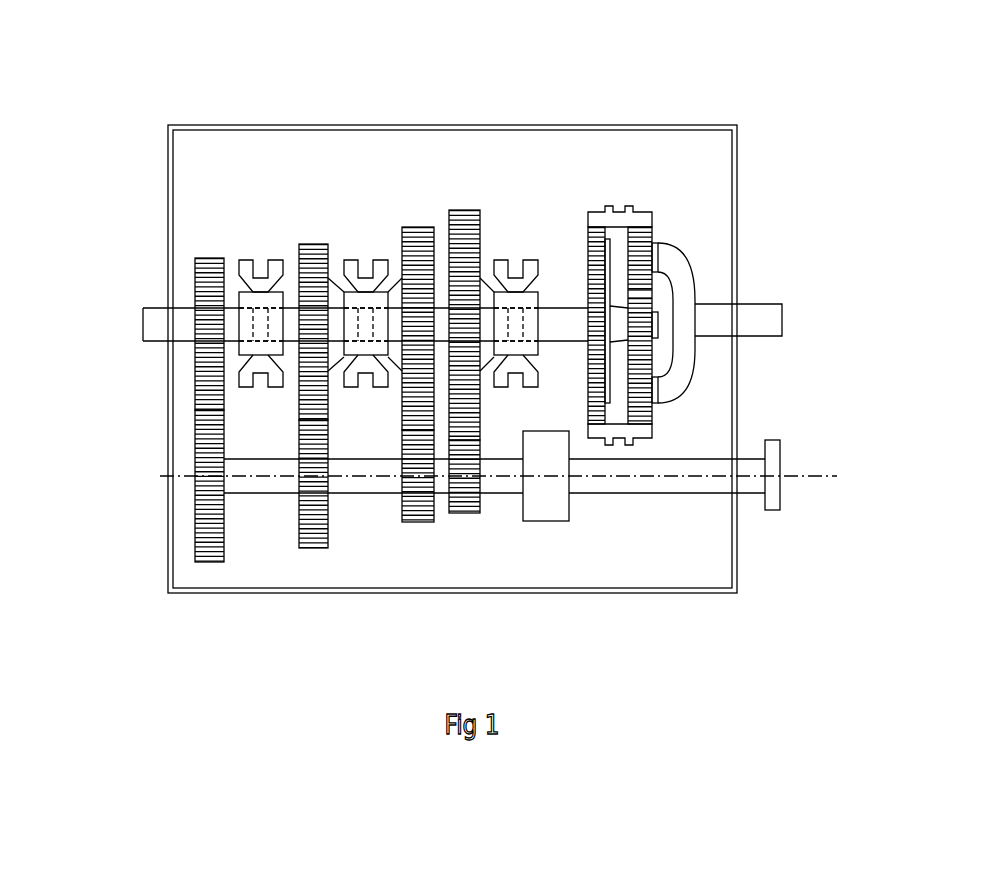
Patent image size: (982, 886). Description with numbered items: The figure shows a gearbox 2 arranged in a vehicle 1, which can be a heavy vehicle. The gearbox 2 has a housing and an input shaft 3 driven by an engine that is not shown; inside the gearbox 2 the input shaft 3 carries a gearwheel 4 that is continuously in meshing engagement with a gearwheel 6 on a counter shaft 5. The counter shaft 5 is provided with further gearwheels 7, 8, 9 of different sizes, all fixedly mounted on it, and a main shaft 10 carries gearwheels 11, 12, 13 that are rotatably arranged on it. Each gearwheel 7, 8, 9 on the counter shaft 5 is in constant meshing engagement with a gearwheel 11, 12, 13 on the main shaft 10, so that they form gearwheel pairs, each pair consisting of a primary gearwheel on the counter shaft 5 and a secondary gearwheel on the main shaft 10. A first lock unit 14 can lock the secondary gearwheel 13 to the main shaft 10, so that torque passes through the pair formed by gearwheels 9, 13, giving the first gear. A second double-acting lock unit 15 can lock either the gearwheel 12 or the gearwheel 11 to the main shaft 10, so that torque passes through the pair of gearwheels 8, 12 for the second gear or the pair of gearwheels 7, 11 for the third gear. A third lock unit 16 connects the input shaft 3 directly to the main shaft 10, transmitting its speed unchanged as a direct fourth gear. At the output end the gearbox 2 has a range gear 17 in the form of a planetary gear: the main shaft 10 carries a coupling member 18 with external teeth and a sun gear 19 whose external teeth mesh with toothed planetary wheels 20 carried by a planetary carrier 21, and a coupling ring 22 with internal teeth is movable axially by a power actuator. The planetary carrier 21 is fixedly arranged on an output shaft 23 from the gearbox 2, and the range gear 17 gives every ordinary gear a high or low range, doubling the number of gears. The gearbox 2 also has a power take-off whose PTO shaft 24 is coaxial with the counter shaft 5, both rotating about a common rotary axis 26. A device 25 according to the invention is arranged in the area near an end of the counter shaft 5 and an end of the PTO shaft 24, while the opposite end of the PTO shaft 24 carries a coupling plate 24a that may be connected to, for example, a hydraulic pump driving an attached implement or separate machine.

The vehicle 1 is at (564, 37).
The gearbox 2 is at (240, 128).
The input shaft 3 is at (163, 323).
The gearwheel 4 is at (208, 288).
The counter shaft 5 is at (264, 482).
The gearwheel 6 is at (210, 460).
The gearwheel 7 is at (313, 517).
The gearwheel 8 is at (418, 507).
The gearwheel 9 is at (467, 500).
The main shaft 10 is at (569, 325).
The gearwheel 11 is at (312, 250).
The gearwheel 12 is at (409, 243).
The gearwheel 13 is at (467, 217).
The first lock unit 14 is at (516, 283).
The second double-acting lock unit 15 is at (365, 279).
The third lock unit 16 is at (257, 280).
The range gear 17 is at (630, 295).
The coupling member 18 is at (597, 263).
The sun gear 19 is at (640, 323).
The planetary wheel 20 is at (642, 395).
The planetary carrier 21 is at (669, 265).
The coupling ring 22 is at (615, 217).
The output shaft 23 is at (750, 318).
The PTO shaft 24 is at (656, 480).
The coupling plate 24a is at (775, 462).
The device 25 is at (547, 492).
The rotary axis 26 is at (802, 477).